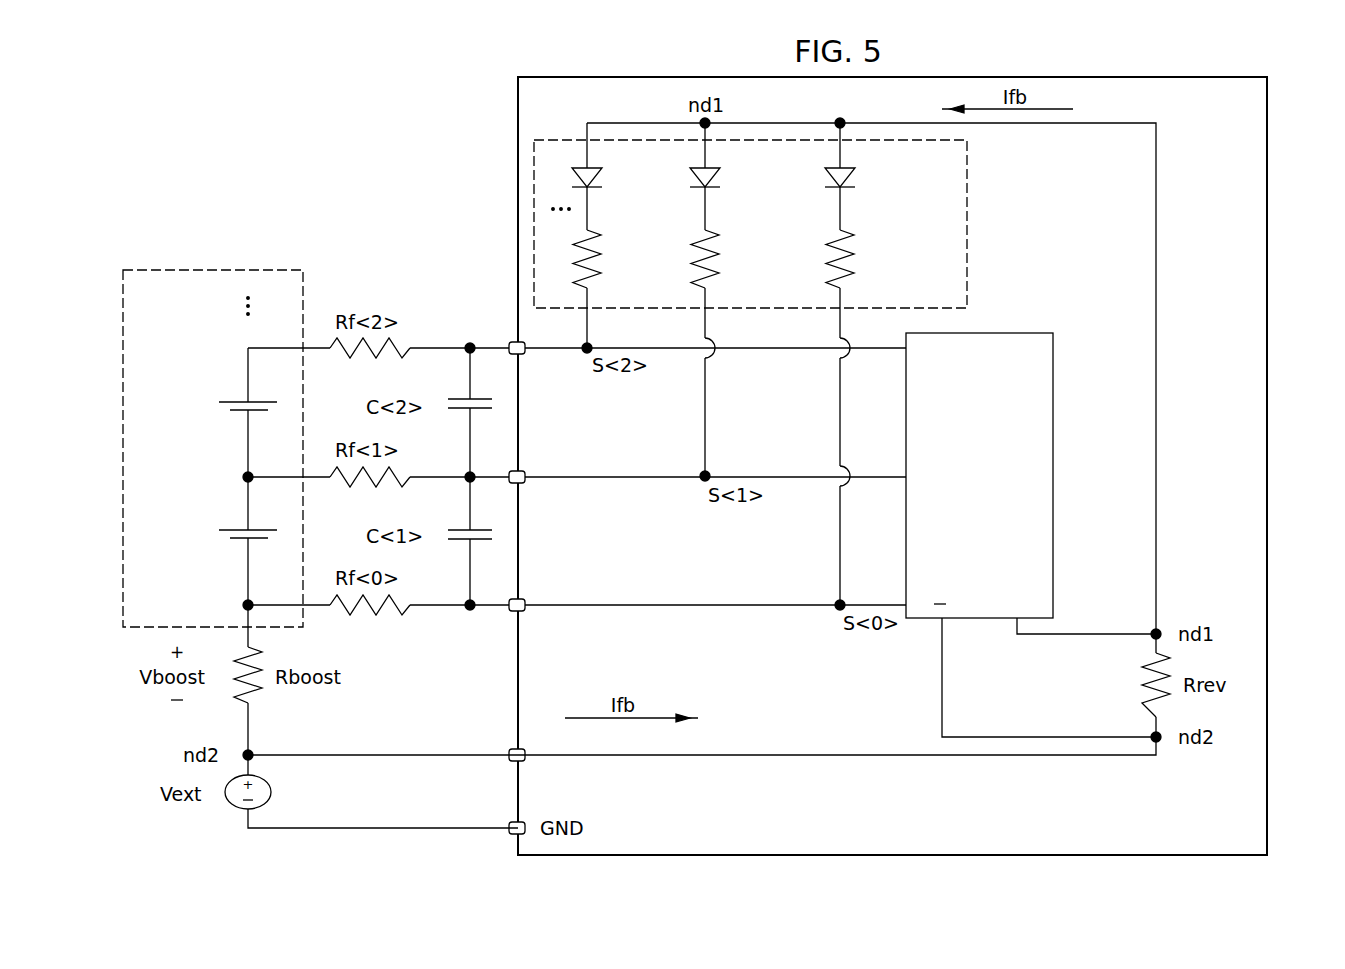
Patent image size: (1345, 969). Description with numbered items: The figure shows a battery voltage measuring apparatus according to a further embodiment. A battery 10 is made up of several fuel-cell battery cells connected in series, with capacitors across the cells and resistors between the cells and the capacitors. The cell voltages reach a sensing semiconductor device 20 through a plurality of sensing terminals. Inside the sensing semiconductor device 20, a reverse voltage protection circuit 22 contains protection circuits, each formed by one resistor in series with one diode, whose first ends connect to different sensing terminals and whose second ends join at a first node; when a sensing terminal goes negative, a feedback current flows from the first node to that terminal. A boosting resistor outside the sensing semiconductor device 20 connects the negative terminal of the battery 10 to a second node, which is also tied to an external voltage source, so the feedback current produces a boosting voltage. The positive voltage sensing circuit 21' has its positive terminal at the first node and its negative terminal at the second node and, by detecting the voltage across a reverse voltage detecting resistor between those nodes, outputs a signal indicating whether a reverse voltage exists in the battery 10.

The battery 10 is at (250, 270).
The sensing semiconductor device 20 is at (1267, 112).
The positive voltage sensing circuit 21' is at (979, 451).
The reverse voltage protection circuit 22 is at (967, 172).